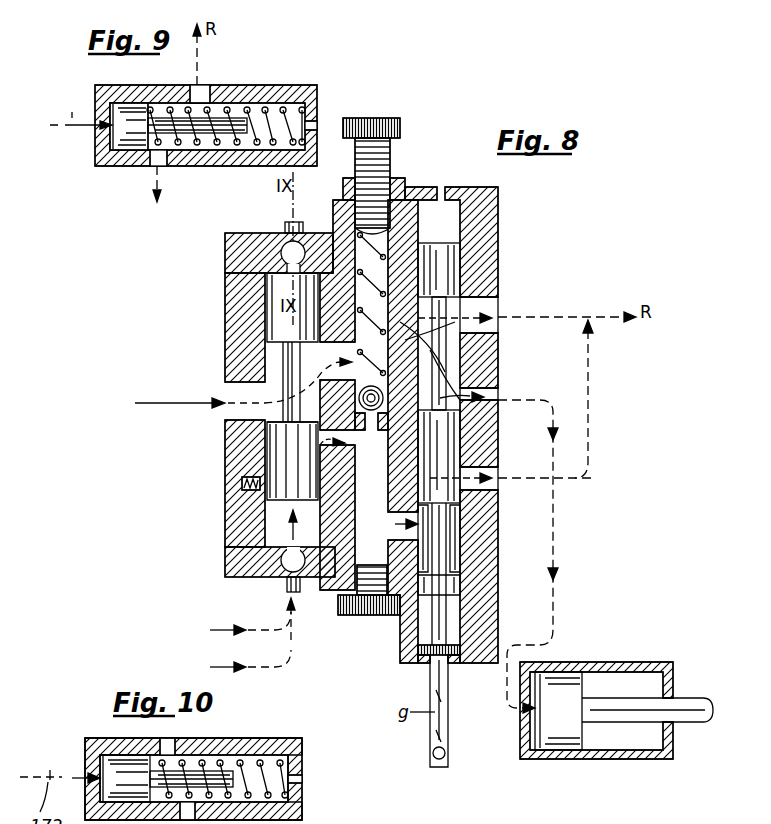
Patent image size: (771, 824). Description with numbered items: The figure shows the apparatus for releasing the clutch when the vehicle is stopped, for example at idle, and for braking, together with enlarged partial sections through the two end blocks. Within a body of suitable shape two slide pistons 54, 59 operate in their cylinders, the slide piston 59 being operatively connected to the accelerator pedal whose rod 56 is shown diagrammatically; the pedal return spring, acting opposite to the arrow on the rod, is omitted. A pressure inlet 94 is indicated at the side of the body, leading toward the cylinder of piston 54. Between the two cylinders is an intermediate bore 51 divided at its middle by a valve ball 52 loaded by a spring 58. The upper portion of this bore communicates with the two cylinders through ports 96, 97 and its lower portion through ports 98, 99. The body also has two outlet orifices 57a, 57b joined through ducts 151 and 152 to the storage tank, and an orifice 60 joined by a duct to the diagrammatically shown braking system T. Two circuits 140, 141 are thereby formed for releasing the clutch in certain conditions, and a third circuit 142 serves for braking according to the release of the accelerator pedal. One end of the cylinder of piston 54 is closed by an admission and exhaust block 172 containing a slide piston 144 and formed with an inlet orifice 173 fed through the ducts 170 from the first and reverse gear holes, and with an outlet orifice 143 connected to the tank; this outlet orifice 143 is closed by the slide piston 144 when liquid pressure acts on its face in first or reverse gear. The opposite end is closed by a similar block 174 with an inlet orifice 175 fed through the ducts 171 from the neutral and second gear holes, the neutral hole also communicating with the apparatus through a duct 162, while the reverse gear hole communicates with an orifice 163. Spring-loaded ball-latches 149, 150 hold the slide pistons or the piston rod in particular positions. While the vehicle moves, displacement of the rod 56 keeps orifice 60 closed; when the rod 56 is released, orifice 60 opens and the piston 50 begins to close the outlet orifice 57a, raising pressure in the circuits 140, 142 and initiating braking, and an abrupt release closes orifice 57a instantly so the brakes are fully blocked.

In FIG. 9, the outlet orifice 143 is at (204, 93).
In FIG. 8, the outlet orifice 143 is at (298, 228).
In FIG. 8, the admission and exhaust block 172 is at (228, 255).
In FIG. 8, the slide piston 54 is at (225, 322).
In FIG. 8, the port 96 is at (292, 357).
In FIG. 8, the pressure inlet 94 is at (153, 406).
In FIG. 8, the port 98 is at (300, 455).
In FIG. 8, the spring-loaded ball-latch 149 is at (242, 485).
In FIG. 8, the block 174 is at (235, 563).
In FIG. 10, the block 174 is at (257, 744).
In FIG. 8, the inlet orifice 175 is at (287, 585).
In FIG. 10, the inlet orifice 175 is at (96, 774).
In FIG. 8, the ducts 171 is at (248, 633).
In FIG. 8, the duct 162 is at (245, 671).
In FIG. 8, the intermediate bore 51 is at (342, 583).
In FIG. 8, the circuit 141 is at (395, 524).
In FIG. 8, the valve ball 52 is at (372, 430).
In FIG. 8, the spring 58 is at (377, 322).
In FIG. 8, the piston 50 is at (462, 265).
In FIG. 8, the outlet orifice 57a is at (492, 300).
In FIG. 8, the duct 151 is at (574, 315).
In FIG. 8, the circuit 140 is at (455, 322).
In FIG. 8, the port 97 is at (445, 340).
In FIG. 8, the orifice 60 is at (490, 396).
In FIG. 8, the circuit 142 is at (455, 405).
In FIG. 8, the slide piston 59 is at (465, 445).
In FIG. 8, the duct 152 is at (576, 482).
In FIG. 8, the outlet orifice 57b is at (492, 490).
In FIG. 8, the port 99 is at (450, 535).
In FIG. 8, the orifice 163 is at (562, 600).
In FIG. 8, the spring-loaded ball-latch 150 is at (422, 668).
In FIG. 8, the rod 56 is at (448, 696).
In FIG. 8, the braking system T is at (606, 662).
In FIG. 9, the ducts 170 is at (81, 111).
In FIG. 9, the inlet orifice 173 is at (100, 133).
In FIG. 9, the slide piston 144 is at (135, 128).